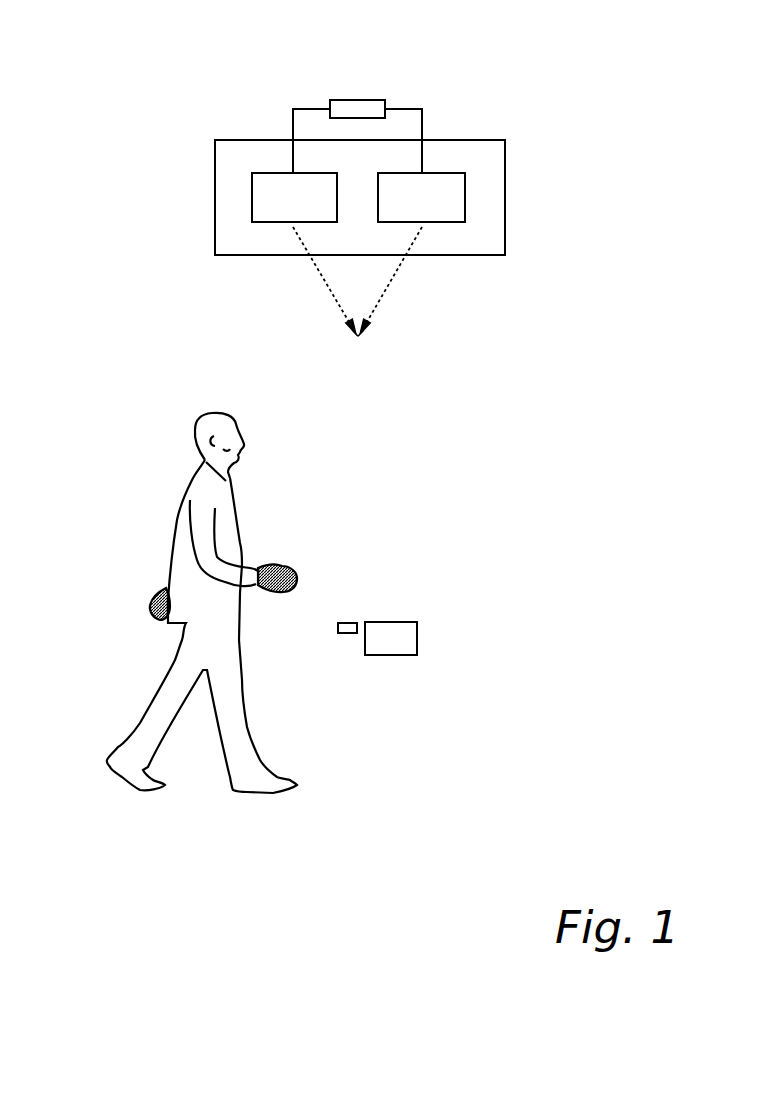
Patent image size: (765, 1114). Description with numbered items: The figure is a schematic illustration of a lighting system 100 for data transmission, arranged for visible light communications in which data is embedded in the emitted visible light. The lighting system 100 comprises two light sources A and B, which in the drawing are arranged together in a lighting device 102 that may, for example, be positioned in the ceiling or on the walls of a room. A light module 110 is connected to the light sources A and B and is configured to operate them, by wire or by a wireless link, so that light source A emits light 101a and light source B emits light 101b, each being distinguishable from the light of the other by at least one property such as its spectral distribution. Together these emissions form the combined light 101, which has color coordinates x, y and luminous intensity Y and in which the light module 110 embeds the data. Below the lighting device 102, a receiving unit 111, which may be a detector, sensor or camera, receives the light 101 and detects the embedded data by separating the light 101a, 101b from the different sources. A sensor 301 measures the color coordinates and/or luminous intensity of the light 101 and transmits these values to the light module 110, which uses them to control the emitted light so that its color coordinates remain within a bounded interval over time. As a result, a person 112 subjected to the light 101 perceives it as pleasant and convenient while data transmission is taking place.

The lighting system 100 is at (510, 82).
The lighting device 102 is at (504, 156).
The light module 110 is at (360, 100).
The light source A is at (252, 198).
The light source B is at (465, 197).
The light 101a is at (324, 277).
The light 101b is at (388, 283).
The combined light 101 is at (358, 350).
The person 112 is at (177, 520).
The sensor 301 is at (346, 622).
The receiving unit 111 is at (392, 621).